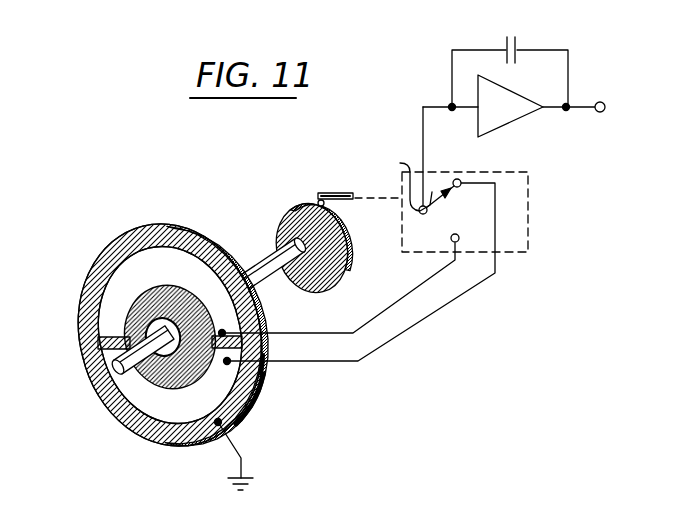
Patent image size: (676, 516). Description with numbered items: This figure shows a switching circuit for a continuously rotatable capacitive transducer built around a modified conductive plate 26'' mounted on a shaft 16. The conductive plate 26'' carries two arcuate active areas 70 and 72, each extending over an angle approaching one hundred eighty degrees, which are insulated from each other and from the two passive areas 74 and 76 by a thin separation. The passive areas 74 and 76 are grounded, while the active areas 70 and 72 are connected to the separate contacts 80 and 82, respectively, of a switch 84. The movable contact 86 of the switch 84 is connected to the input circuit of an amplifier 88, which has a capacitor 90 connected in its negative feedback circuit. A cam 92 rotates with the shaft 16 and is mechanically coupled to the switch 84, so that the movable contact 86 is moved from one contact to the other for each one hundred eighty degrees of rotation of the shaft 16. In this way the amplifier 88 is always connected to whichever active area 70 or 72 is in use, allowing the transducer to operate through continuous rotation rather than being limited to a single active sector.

The active area 70 is at (167, 267).
The shaft 16 is at (268, 262).
The passive area 76 is at (95, 272).
The active area 72 is at (226, 395).
The passive area 74 is at (167, 371).
The conductive plate 26'' is at (287, 379).
The cam 92 is at (347, 241).
The contact 80 is at (440, 241).
The contact 82 is at (462, 179).
The switch 84 is at (530, 232).
The movable contact 86 is at (400, 163).
The amplifier 88 is at (523, 98).
The capacitor 90 is at (518, 43).